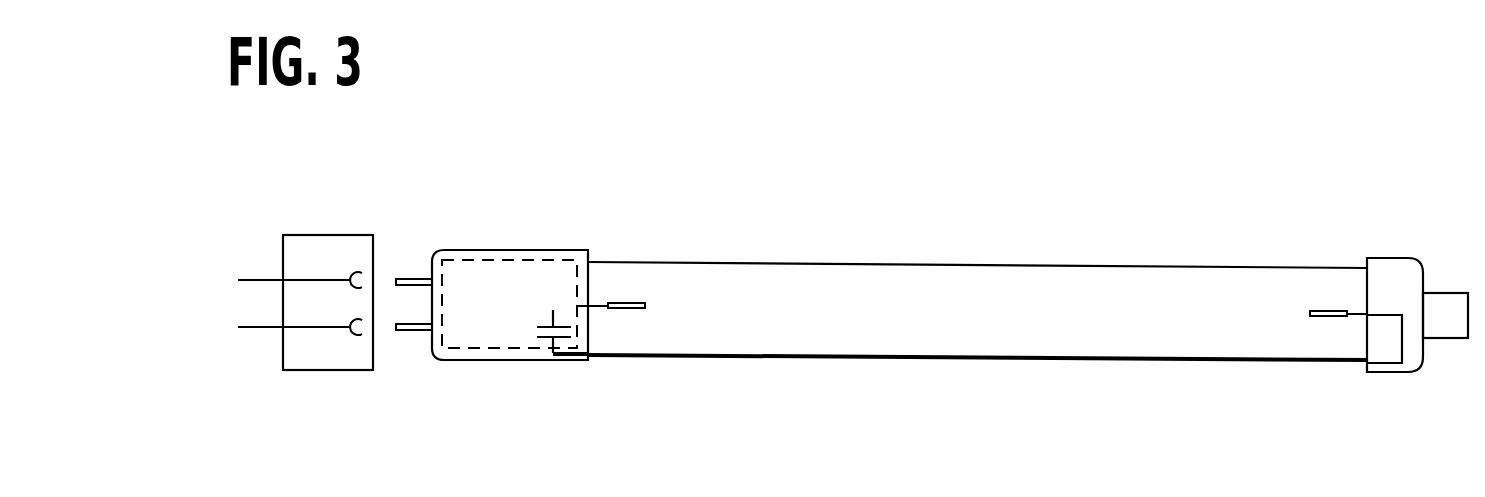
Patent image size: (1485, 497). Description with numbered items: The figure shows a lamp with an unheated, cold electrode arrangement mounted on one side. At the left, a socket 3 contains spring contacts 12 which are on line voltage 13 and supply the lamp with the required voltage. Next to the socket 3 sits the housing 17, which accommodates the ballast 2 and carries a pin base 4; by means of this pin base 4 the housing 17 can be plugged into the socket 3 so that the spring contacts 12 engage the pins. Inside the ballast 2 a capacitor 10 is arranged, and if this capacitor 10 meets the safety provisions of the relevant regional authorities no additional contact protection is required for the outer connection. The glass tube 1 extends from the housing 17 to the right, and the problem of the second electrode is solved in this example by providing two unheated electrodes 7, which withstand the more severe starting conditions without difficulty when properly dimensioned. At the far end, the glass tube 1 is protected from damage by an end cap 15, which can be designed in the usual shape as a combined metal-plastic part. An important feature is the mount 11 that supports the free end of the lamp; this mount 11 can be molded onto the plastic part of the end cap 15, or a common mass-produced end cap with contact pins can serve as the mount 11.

The glass tube 1 is at (1028, 325).
The ballast 2 is at (485, 325).
The socket 3 is at (320, 355).
The pin base 4 is at (413, 305).
The unheated electrodes 7 is at (648, 303).
The capacitor 10 is at (547, 347).
The mount 11 is at (1438, 323).
The spring contacts 12 is at (345, 323).
The line voltage 13 is at (283, 303).
The end cap 15 is at (1402, 275).
The housing 17 is at (578, 367).